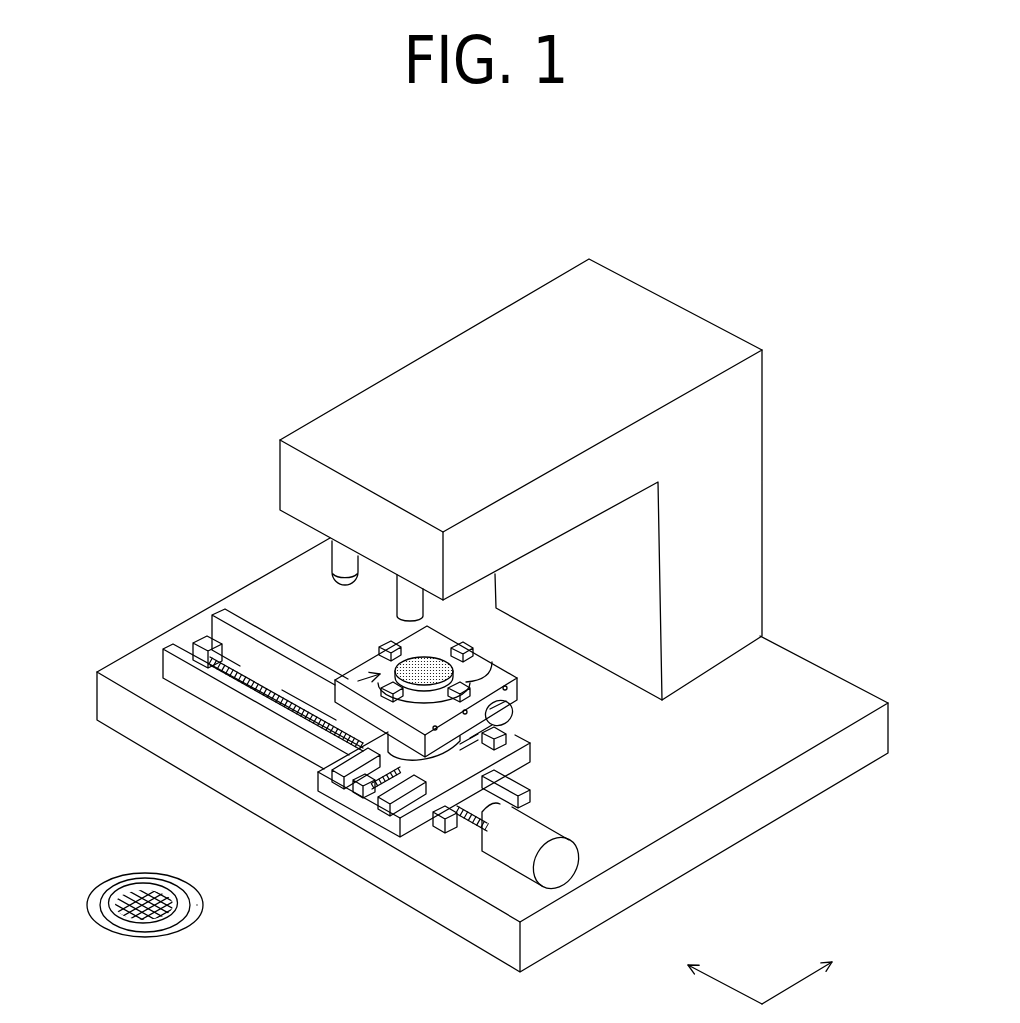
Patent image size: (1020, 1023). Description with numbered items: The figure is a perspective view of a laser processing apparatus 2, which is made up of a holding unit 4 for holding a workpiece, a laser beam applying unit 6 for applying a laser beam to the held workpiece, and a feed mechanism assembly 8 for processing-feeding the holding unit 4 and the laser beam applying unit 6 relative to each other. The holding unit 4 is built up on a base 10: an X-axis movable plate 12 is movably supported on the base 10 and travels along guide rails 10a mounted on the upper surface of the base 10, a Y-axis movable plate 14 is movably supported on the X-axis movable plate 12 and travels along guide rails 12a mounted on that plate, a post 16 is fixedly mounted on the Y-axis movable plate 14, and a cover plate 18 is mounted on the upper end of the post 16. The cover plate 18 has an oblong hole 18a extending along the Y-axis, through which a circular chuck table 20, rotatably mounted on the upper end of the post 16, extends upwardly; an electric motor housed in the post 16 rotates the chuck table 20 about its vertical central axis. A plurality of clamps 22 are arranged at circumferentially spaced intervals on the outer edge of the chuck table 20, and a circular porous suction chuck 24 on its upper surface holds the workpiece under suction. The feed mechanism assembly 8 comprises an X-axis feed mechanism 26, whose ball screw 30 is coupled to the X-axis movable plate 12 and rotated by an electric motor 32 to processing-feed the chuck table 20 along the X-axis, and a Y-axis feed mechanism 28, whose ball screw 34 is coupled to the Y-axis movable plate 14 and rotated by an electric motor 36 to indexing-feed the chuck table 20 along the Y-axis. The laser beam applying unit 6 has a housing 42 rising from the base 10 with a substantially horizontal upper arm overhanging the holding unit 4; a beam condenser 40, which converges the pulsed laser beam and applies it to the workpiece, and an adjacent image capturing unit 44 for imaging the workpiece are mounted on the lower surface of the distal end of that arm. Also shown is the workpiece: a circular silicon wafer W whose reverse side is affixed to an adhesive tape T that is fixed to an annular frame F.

The laser processing apparatus 2 is at (178, 406).
The holding unit 4 is at (380, 812).
The laser beam applying unit 6 is at (766, 438).
The feed mechanism assembly 8 is at (626, 727).
The base 10 is at (752, 757).
The guide rails 10a is at (223, 617).
The X-axis movable plate 12 is at (397, 818).
The guide rails 12a is at (397, 806).
The Y-axis movable plate 14 is at (444, 752).
The post 16 is at (435, 785).
The cover plate 18 is at (357, 705).
The oblong hole 18a is at (473, 680).
The chuck table 20 is at (372, 641).
The clamps 22 is at (465, 652).
The suction chuck 24 is at (428, 665).
The X-axis feed mechanism 26 is at (586, 773).
The Y-axis feed mechanism 28 is at (584, 708).
The ball screw 30 is at (490, 787).
The electric motor 32 is at (527, 830).
The ball screw 34 is at (500, 747).
The electric motor 36 is at (497, 717).
The beam condenser 40 is at (337, 558).
The housing 42 is at (735, 557).
The image capturing unit 44 is at (408, 597).
The annular frame F is at (147, 877).
The adhesive tape T is at (107, 905).
The wafer W is at (127, 890).